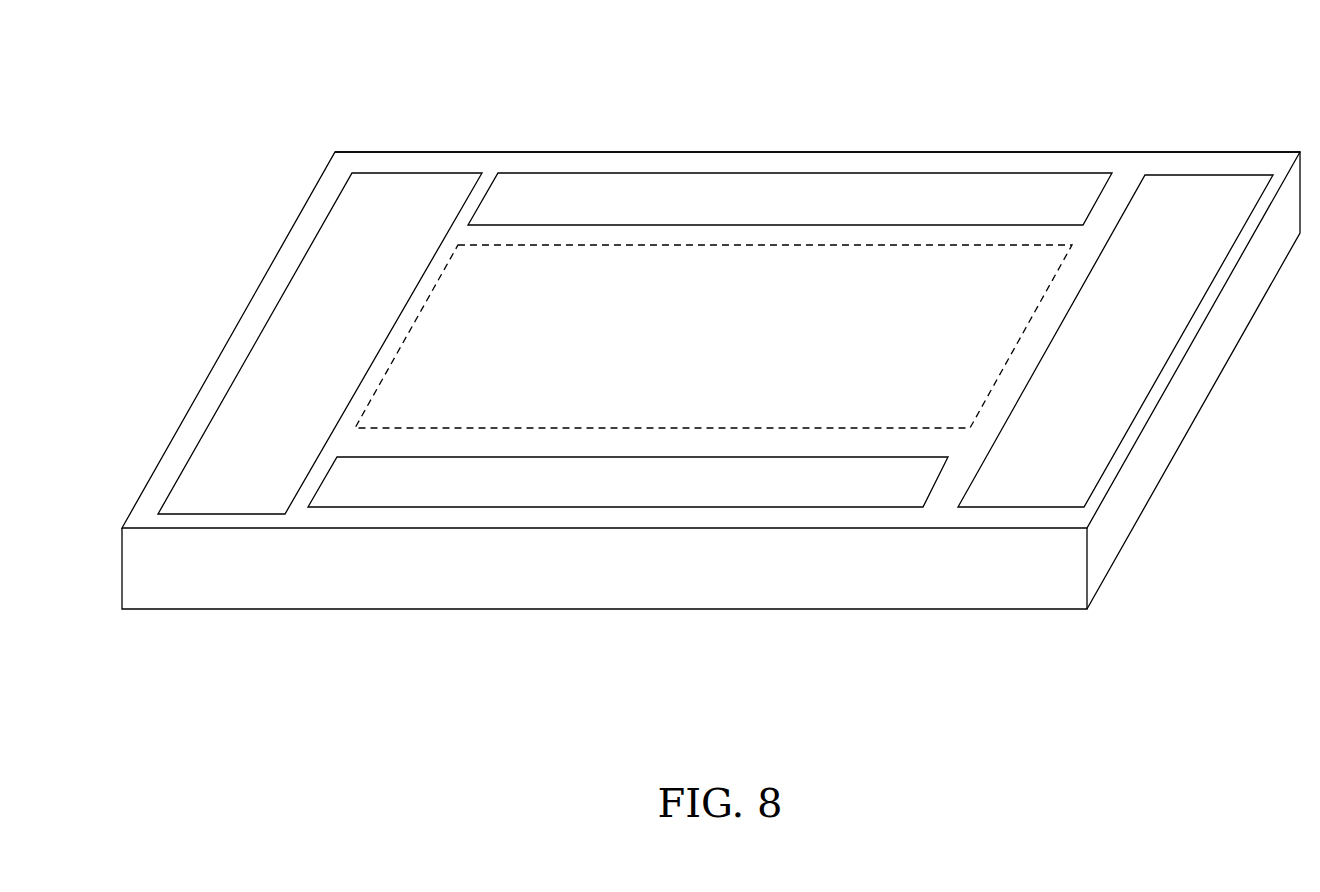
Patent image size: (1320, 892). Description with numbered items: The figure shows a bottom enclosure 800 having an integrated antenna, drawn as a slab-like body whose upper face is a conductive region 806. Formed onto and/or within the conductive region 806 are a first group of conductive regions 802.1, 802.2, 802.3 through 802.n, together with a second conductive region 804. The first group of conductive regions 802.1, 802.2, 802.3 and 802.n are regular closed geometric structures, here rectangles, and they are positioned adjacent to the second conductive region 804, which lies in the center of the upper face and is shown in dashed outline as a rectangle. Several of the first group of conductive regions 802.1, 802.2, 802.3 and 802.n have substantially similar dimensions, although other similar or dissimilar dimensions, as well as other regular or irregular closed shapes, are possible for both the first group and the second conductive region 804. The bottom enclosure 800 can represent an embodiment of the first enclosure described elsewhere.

The bottom enclosure 800 is at (1245, 130).
The first conductive region of the first group 802.1 is at (342, 344).
The second conductive region of the first group 802.2 is at (740, 212).
The third conductive region of the first group 802.3 is at (1095, 342).
The nth conductive region of the first group 802.n is at (607, 492).
The second conductive region 804 is at (697, 345).
The conductive region 806 is at (1030, 152).